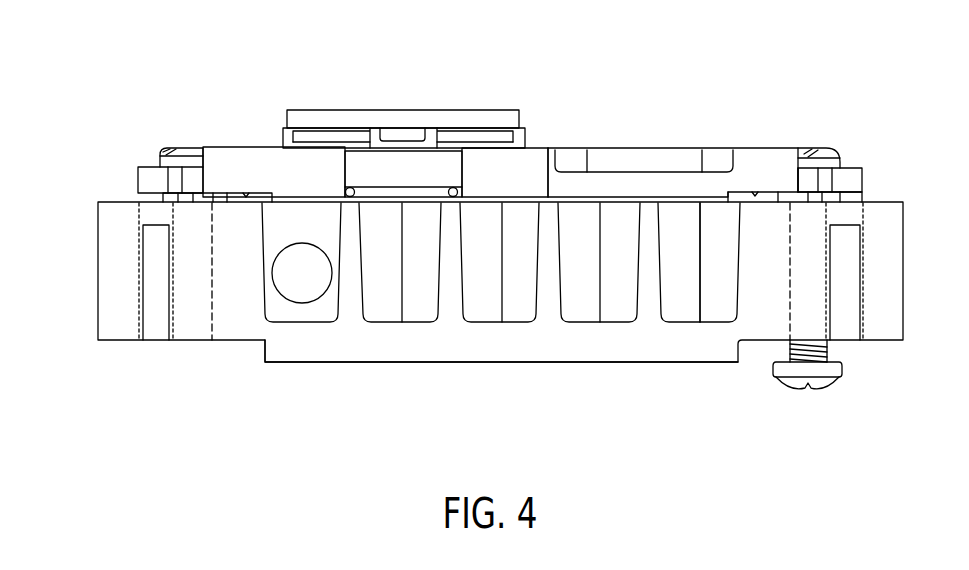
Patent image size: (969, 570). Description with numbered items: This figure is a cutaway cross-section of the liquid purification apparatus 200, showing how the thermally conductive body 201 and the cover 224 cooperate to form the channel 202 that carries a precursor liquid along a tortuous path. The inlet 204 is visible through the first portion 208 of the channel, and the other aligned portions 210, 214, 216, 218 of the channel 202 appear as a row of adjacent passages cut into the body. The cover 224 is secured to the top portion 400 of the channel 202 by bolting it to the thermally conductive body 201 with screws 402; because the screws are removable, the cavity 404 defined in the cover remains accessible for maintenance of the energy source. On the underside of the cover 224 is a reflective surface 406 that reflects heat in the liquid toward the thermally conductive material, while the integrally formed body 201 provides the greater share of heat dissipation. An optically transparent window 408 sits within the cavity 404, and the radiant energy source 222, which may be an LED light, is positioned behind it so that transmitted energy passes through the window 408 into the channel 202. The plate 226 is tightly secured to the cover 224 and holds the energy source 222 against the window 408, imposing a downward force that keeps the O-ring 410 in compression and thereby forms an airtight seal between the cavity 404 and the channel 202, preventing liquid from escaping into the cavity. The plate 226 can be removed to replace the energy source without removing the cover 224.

The liquid purification apparatus 200 is at (166, 110).
The thermally conductive body 201 is at (98, 272).
The channel 202 is at (266, 330).
The inlet 204 is at (302, 276).
The first portion 208 is at (260, 311).
The second portion 210 is at (382, 292).
The portion of the channel 214 is at (483, 292).
The portion of the channel 216 is at (582, 292).
The portion of the channel 218 is at (678, 292).
The radiant energy source 222 is at (377, 137).
The cover 224 is at (769, 156).
The plate 226 is at (508, 118).
The top portion of the channel 400 is at (731, 230).
The screws 402 is at (828, 381).
The cavity 404 is at (355, 137).
The reflective surface 406 is at (548, 197).
The optically transparent window 408 is at (408, 165).
The O-ring 410 is at (346, 191).